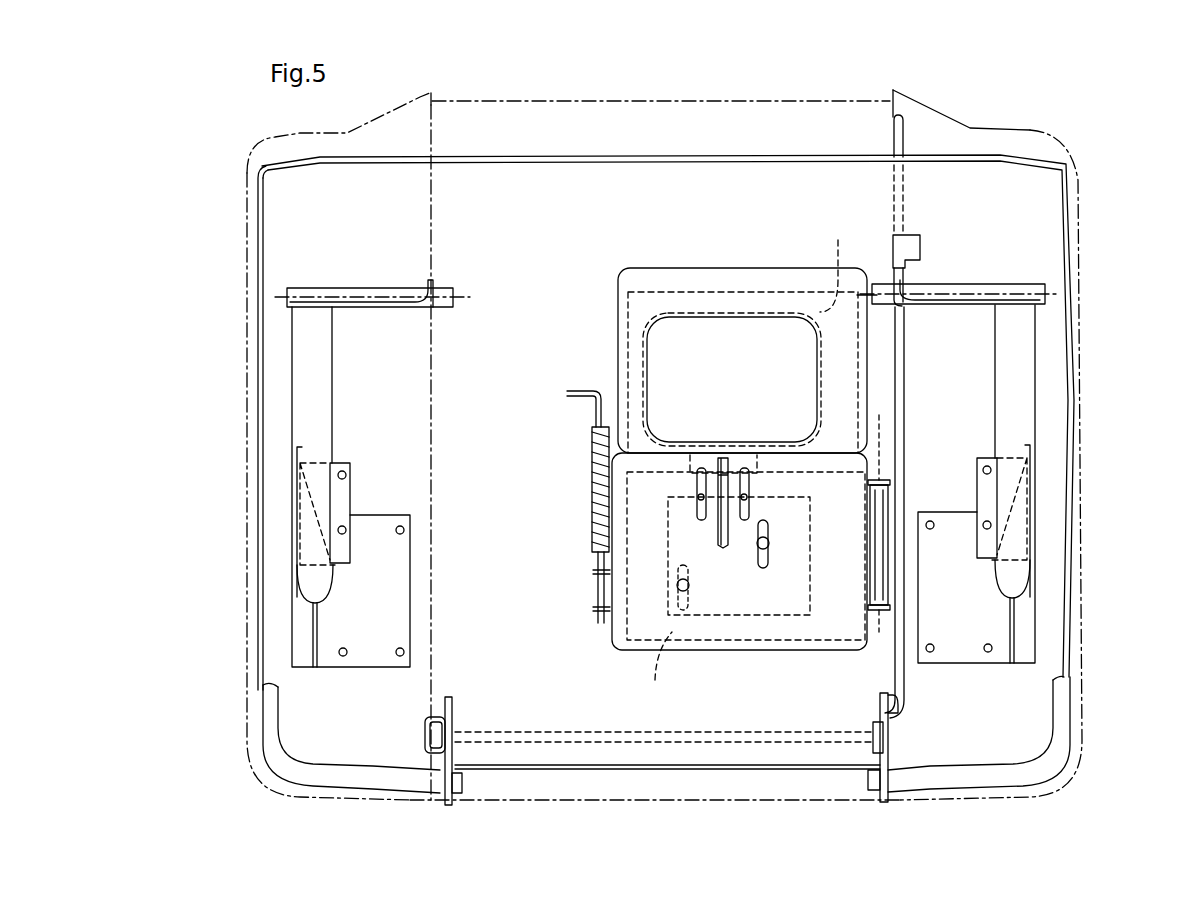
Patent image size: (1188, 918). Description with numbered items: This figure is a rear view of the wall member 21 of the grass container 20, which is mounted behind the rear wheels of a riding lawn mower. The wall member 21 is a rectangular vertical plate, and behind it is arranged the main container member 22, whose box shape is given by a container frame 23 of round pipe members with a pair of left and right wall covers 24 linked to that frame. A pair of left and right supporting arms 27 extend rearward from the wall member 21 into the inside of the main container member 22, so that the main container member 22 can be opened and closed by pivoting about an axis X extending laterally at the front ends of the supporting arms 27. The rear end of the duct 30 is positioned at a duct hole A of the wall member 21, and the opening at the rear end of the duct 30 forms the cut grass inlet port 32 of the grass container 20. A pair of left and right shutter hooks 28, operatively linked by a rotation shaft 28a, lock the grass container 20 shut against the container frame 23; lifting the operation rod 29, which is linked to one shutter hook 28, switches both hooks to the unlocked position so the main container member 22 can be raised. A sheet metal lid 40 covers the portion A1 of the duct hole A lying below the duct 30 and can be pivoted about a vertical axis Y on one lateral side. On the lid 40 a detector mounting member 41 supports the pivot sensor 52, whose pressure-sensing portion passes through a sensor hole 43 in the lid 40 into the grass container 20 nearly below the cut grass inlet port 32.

The grass container 20 is at (1084, 180).
The wall member 21 is at (540, 162).
The main container member 22 is at (620, 100).
The container frame 23 is at (398, 772).
The wall cover 24 is at (235, 352).
The supporting arm 27 is at (322, 378).
The shutter hook 28 is at (455, 758).
The rotation shaft 28a is at (602, 745).
The operation rod 29 is at (903, 133).
The duct 30 is at (668, 268).
The cut grass inlet port 32 is at (742, 345).
The lid 40 is at (770, 628).
The detector mounting member 41 is at (668, 560).
The sensor hole 43 is at (720, 463).
The pivot sensor 52 is at (725, 548).
The axis X is at (372, 285).
The axis Y is at (882, 450).
The duct hole A is at (848, 261).
The portion of the duct hole A1 is at (656, 675).